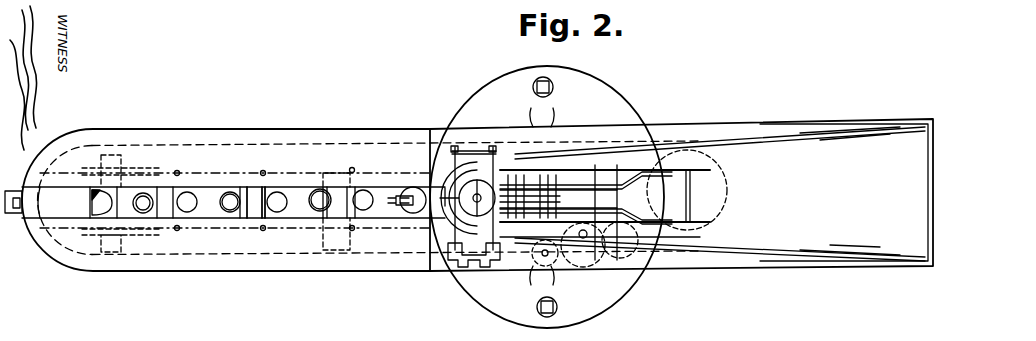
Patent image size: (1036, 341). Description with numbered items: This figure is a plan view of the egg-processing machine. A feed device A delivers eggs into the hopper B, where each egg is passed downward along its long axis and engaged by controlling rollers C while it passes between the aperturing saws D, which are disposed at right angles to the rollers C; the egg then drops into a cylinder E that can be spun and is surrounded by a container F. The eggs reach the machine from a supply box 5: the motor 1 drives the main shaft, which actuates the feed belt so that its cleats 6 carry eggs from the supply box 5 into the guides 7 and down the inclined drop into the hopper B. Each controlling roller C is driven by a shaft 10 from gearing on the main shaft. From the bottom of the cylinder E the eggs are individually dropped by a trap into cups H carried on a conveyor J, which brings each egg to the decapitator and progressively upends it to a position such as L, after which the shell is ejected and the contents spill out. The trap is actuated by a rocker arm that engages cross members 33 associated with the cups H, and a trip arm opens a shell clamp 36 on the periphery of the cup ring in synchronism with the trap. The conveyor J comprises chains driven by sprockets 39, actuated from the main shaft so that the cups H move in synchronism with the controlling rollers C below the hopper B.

The motor 1 is at (672, 232).
The supply box 5 is at (900, 180).
The cleats 6 is at (633, 215).
The guides 7 is at (575, 175).
The shaft 10 is at (483, 150).
The cross members 33 is at (272, 217).
The shell clamp 36 is at (182, 205).
The sprockets 39 is at (240, 182).
The feed device A is at (650, 195).
The hopper B is at (457, 177).
The controlling rollers C is at (440, 163).
The aperturing saws D is at (460, 187).
The cylinder E is at (453, 210).
The container F is at (435, 210).
The cups H is at (268, 188).
The conveyor J is at (207, 197).
The upended egg position L is at (147, 215).